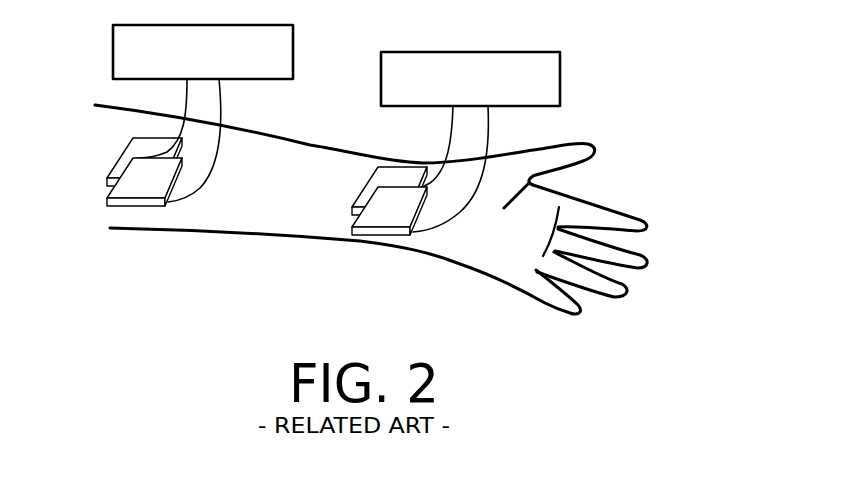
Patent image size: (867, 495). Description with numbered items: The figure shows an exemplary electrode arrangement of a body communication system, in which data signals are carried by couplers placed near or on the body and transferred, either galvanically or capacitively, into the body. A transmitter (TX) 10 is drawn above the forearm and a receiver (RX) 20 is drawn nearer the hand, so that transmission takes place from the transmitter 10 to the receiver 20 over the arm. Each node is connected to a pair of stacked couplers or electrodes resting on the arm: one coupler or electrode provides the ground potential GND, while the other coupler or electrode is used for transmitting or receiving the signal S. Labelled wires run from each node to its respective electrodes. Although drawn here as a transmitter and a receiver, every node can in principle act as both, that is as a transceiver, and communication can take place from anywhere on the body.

The transmitter (TX) 10 is at (113, 52).
The receiver (RX) 20 is at (560, 80).
The ground potential GND is at (280, 147).
The signal S is at (308, 157).